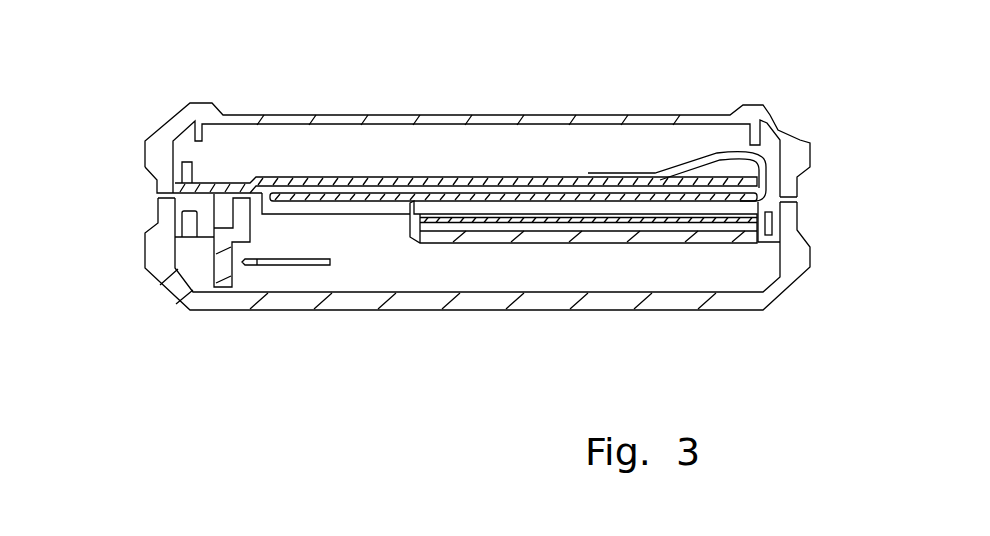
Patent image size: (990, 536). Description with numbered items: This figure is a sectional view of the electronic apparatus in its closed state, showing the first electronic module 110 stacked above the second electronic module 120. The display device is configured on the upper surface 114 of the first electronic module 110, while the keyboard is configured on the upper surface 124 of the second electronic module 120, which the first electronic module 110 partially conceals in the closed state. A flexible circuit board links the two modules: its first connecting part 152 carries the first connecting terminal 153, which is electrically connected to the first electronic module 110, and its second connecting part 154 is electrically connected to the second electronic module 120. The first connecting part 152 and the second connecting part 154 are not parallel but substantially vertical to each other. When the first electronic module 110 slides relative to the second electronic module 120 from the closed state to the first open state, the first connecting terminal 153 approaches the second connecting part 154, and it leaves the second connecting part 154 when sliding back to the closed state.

The first electronic module 110 is at (284, 190).
The upper surface 114 is at (404, 177).
The first connecting terminal 153 is at (621, 172).
The upper surface 124 is at (748, 213).
The first connecting part 152 is at (713, 200).
The second connecting part 154 is at (293, 201).
The second electronic module 120 is at (487, 238).